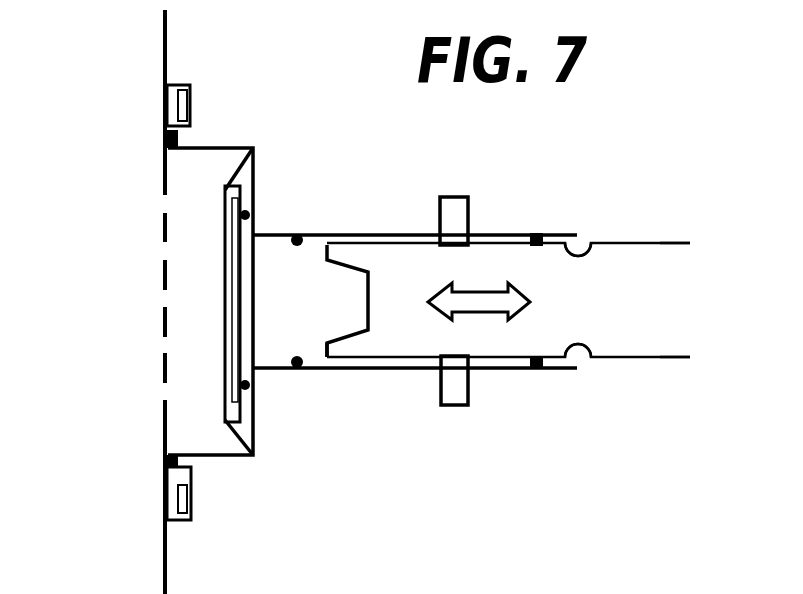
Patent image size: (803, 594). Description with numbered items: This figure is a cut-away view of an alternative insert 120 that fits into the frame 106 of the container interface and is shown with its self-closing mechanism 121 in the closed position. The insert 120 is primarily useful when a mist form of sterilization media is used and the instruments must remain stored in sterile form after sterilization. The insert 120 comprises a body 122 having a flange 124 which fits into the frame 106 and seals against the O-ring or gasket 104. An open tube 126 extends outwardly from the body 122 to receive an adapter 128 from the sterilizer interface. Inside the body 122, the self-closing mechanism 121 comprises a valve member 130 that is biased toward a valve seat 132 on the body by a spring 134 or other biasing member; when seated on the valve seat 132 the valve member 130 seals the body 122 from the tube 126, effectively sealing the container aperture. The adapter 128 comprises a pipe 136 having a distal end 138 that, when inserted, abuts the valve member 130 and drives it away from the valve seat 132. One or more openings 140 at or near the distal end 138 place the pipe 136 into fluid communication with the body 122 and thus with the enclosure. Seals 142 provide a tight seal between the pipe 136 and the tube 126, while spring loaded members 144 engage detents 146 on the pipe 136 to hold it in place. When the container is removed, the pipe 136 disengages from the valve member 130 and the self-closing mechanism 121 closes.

The O-ring or gasket 104 is at (162, 133).
The frame 106 is at (190, 97).
The insert 120 is at (275, 105).
The self-closing mechanism 121 is at (210, 198).
The body 122 is at (217, 460).
The flange 124 is at (182, 131).
The open tube 126 is at (313, 233).
The adapter 128 is at (673, 370).
The valve member 130 is at (225, 292).
The valve seat 132 is at (250, 212).
The spring 134 is at (237, 428).
The pipe 136 is at (638, 242).
The distal end 138 is at (327, 362).
The openings 140 is at (343, 290).
The seals 142 is at (537, 231).
The spring loaded members 144 is at (453, 407).
The detents 146 is at (583, 358).